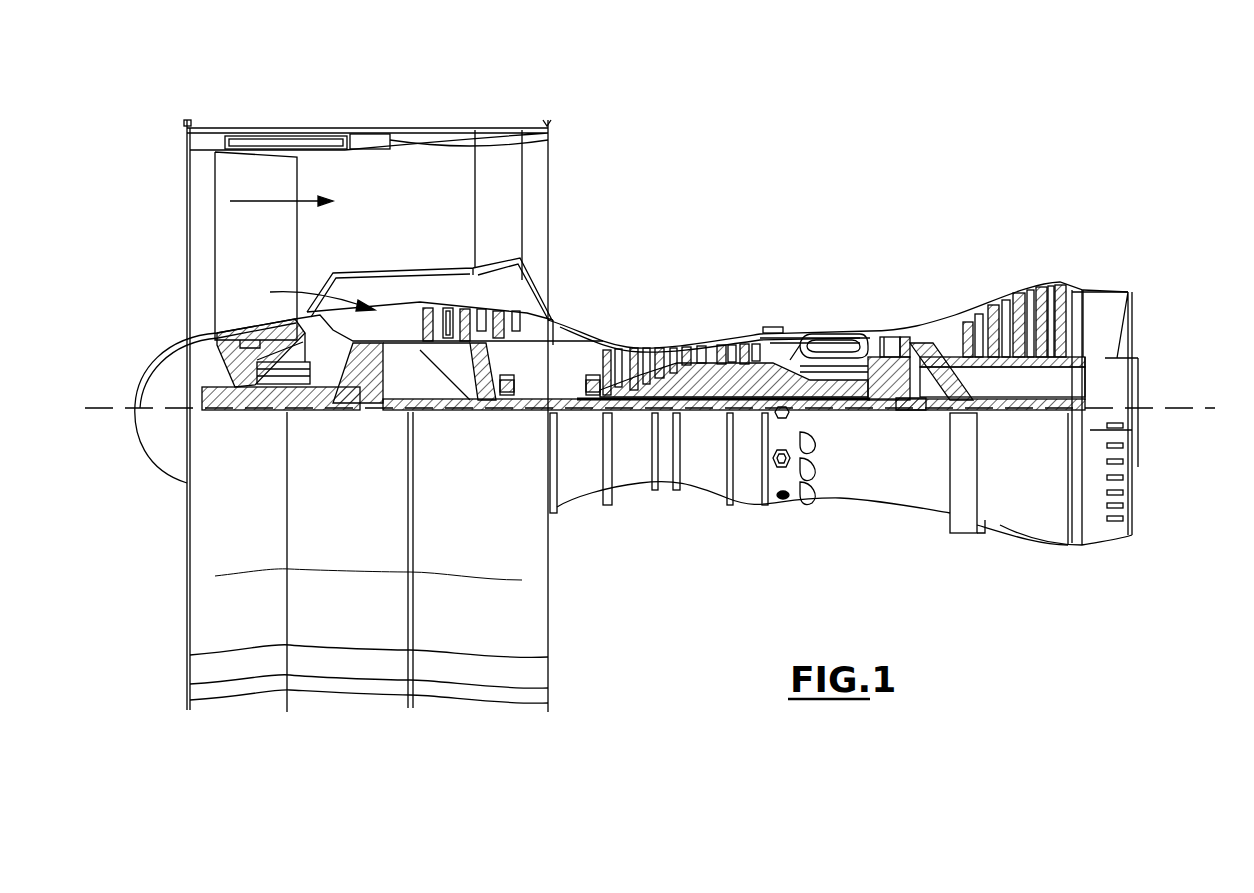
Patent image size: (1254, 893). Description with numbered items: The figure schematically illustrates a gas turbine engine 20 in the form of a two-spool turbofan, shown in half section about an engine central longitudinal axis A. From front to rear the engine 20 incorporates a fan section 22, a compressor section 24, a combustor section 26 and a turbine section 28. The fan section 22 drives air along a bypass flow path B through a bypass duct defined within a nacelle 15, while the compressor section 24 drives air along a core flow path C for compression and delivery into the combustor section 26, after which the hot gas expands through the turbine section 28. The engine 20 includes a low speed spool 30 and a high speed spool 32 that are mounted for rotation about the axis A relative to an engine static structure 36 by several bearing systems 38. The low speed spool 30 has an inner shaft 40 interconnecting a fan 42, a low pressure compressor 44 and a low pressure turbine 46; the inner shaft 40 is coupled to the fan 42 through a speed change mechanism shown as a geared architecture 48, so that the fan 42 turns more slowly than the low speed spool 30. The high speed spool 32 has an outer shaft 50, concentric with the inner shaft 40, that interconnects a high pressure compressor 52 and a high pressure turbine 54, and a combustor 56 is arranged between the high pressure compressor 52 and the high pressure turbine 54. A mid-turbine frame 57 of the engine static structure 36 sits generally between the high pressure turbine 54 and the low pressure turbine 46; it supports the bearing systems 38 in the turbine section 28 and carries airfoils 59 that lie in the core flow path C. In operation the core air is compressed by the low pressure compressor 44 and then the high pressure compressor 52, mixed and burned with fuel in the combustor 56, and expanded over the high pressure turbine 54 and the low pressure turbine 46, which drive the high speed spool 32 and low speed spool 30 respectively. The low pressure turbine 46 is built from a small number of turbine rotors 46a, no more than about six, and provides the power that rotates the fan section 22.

The nacelle 15 is at (368, 128).
The gas turbine engine 20 is at (838, 172).
The fan section 22 is at (292, 108).
The compressor section 24 is at (604, 312).
The combustor section 26 is at (820, 298).
The turbine section 28 is at (975, 260).
The low speed spool 30 is at (705, 425).
The high speed spool 32 is at (750, 345).
The engine static structure 36 is at (748, 505).
The bearing systems 38 is at (507, 398).
The inner shaft 40 is at (568, 413).
The fan 42 is at (270, 256).
The low pressure compressor 44 is at (465, 325).
The low pressure turbine 46 is at (1010, 300).
The turbine rotors 46a is at (1030, 310).
The geared architecture 48 is at (377, 398).
The outer shaft 50 is at (834, 412).
The high pressure compressor 52 is at (680, 380).
The high pressure turbine 54 is at (885, 338).
The combustor 56 is at (822, 352).
The mid-turbine frame 57 is at (938, 312).
The airfoils 59 is at (930, 347).
The engine central longitudinal axis A is at (1208, 410).
The bypass flow path B is at (270, 201).
The core flow path C is at (312, 294).